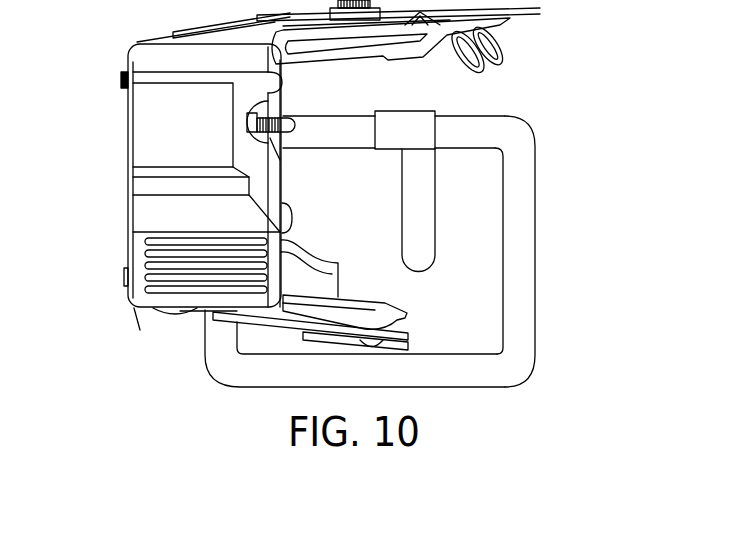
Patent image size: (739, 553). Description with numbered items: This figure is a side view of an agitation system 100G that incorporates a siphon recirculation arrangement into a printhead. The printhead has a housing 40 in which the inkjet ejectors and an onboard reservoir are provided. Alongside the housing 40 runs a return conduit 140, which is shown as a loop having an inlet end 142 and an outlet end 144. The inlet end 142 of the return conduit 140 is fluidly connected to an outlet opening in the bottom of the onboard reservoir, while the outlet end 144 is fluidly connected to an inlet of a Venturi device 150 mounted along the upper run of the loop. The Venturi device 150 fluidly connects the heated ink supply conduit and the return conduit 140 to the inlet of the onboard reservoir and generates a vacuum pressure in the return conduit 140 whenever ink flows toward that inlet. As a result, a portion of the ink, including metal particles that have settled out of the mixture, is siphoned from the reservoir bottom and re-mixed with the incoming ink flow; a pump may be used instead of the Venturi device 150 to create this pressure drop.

The printhead housing 40 is at (128, 119).
The agitation system 100G is at (599, 158).
The return conduit 140 is at (518, 250).
The inlet end of return conduit 142 is at (222, 355).
The outlet end of return conduit 144 is at (473, 127).
The Venturi device 150 is at (413, 126).